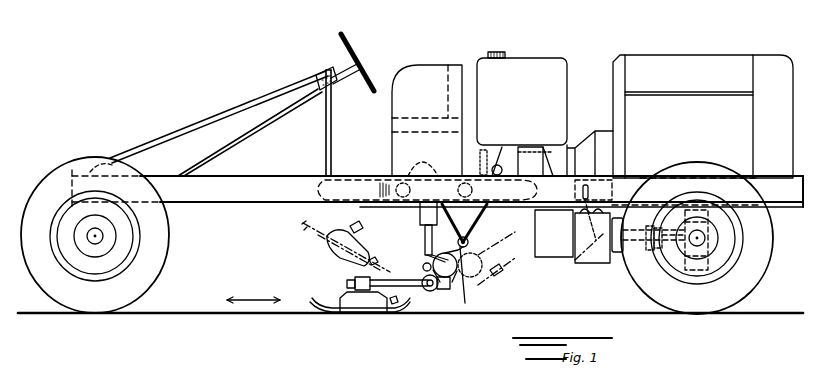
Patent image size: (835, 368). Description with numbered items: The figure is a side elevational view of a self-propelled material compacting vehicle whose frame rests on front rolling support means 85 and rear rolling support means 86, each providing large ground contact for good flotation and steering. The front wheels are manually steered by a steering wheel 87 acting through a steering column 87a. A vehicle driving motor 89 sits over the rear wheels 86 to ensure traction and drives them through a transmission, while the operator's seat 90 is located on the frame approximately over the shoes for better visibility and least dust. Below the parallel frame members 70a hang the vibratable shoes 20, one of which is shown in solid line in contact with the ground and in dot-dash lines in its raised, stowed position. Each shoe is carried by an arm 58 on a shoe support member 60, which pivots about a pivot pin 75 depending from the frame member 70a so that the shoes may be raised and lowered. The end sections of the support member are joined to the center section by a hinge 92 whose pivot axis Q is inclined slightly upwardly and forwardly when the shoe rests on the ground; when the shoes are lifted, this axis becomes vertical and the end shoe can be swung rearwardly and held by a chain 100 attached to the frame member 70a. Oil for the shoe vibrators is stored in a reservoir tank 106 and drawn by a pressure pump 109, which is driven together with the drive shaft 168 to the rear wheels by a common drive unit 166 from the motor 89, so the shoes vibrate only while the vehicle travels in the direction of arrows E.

The vibratable shoe 20 is at (355, 313).
The arm 58 is at (403, 272).
The shoe support member 60 is at (441, 252).
The frame member 70a is at (437, 187).
The pivot pin 75 is at (470, 241).
The rolling support means 85 is at (155, 258).
The rolling support means 86 is at (762, 276).
The steering wheel 87 is at (343, 62).
The steering column 87a is at (268, 126).
The vehicle driving motor 89 is at (703, 116).
The operator's seat 90 is at (428, 118).
The hinge 92 is at (450, 289).
The chain 100 is at (575, 236).
The reservoir tank 106 is at (522, 98).
The pressure pump 109 is at (500, 162).
The common drive unit 166 is at (594, 265).
The drive shaft 168 is at (640, 255).
The arrows indicating direction of vehicle travel E is at (253, 292).
The pivot axis of the hinge Q is at (465, 285).